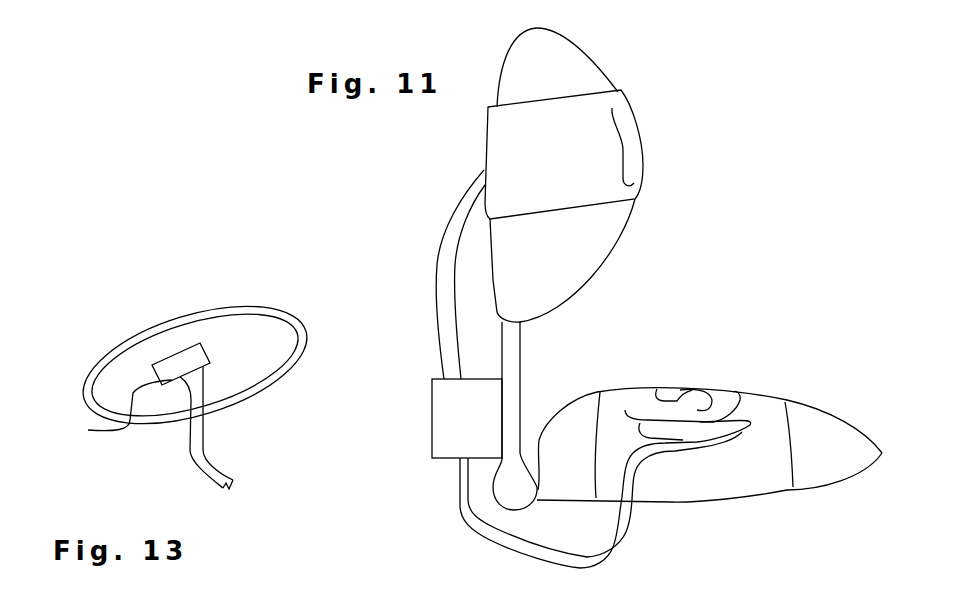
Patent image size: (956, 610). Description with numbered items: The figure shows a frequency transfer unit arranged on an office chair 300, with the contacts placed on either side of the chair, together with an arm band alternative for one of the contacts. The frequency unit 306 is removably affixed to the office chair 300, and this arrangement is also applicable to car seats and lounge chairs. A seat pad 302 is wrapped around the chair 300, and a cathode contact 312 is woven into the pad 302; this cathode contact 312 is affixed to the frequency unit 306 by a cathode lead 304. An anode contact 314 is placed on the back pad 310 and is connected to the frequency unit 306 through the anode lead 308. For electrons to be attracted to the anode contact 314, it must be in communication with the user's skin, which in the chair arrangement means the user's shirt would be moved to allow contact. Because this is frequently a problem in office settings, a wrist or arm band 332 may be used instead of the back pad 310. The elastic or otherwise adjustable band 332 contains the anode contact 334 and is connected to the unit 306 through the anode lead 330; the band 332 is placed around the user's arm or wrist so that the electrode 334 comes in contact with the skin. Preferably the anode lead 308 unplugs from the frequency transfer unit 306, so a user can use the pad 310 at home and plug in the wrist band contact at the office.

In FIG. 11, the office chair 300 is at (802, 295).
In FIG. 11, the seat pad 302 is at (768, 413).
In FIG. 11, the cathode lead 304 is at (460, 512).
In FIG. 11, the frequency unit 306 is at (450, 434).
In FIG. 11, the anode lead 308 is at (447, 264).
In FIG. 11, the back pad 310 is at (607, 108).
In FIG. 11, the cathode contact 312 is at (706, 393).
In FIG. 11, the anode contact 314 is at (635, 142).
In FIG. 13, the anode lead 330 is at (197, 458).
In FIG. 13, the arm band 332 is at (145, 343).
In FIG. 13, the anode contact 334 is at (126, 428).